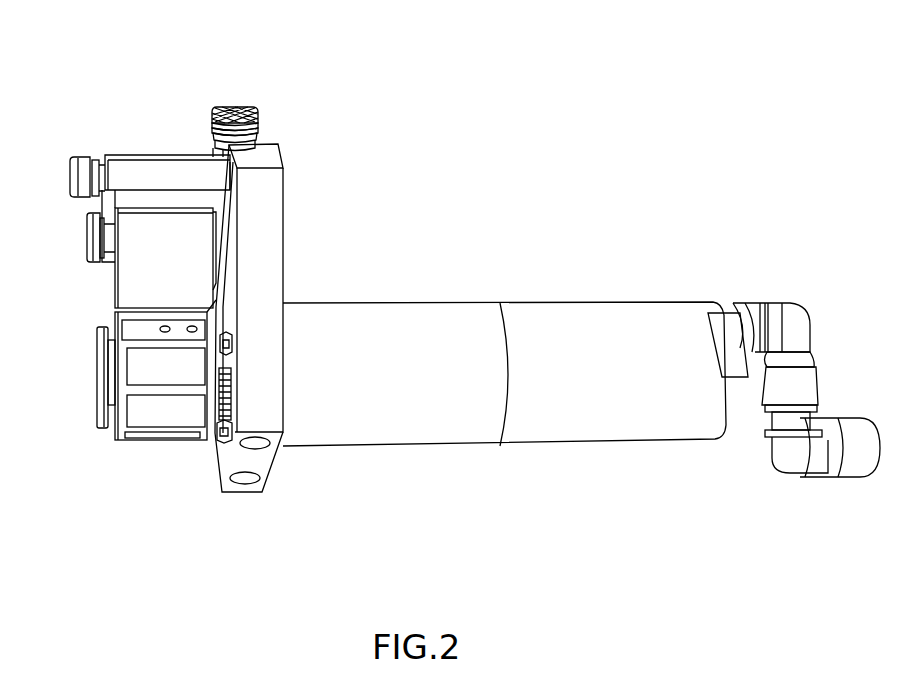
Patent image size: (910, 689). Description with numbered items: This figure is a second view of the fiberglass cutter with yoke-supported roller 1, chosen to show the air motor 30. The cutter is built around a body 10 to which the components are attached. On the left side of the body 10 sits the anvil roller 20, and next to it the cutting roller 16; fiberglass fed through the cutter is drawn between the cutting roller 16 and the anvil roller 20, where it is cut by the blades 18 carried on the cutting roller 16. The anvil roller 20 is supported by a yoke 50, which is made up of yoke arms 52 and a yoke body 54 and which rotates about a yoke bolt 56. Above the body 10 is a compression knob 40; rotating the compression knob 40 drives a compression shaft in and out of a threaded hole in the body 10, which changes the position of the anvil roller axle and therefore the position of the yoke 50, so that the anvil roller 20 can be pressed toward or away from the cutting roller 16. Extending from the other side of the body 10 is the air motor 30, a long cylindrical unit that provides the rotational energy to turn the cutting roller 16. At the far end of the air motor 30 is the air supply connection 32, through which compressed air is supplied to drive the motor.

The fiberglass cutter with yoke-supported roller 1 is at (592, 81).
The body 10 is at (278, 277).
The cutting roller 16 is at (152, 370).
The blades 18 is at (187, 437).
The anvil roller 20 is at (183, 275).
The air motor 30 is at (607, 390).
The air supply connection 32 is at (858, 453).
The compression knob 40 is at (252, 108).
The yoke 50 is at (135, 162).
The yoke arms 52 is at (97, 233).
The yoke body 54 is at (113, 155).
The yoke bolt 56 is at (70, 180).